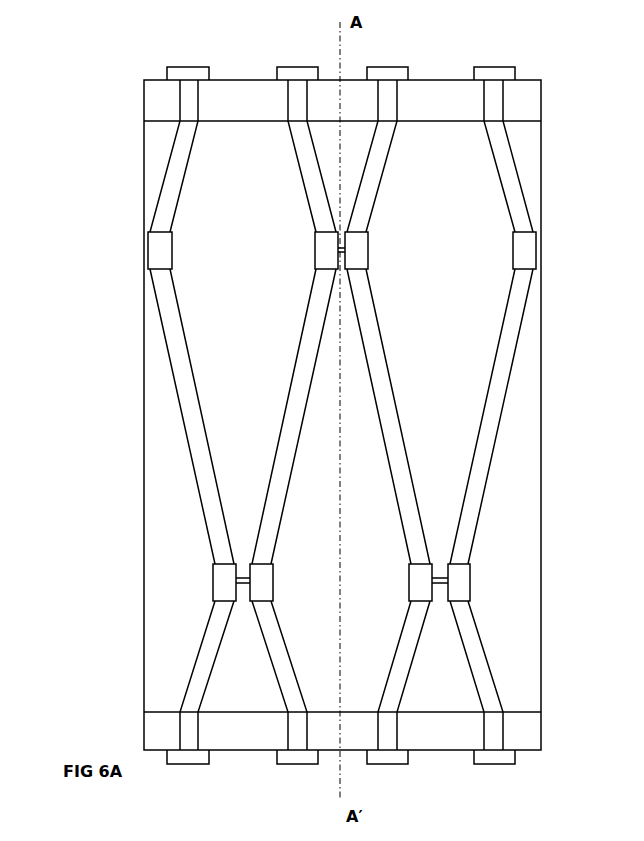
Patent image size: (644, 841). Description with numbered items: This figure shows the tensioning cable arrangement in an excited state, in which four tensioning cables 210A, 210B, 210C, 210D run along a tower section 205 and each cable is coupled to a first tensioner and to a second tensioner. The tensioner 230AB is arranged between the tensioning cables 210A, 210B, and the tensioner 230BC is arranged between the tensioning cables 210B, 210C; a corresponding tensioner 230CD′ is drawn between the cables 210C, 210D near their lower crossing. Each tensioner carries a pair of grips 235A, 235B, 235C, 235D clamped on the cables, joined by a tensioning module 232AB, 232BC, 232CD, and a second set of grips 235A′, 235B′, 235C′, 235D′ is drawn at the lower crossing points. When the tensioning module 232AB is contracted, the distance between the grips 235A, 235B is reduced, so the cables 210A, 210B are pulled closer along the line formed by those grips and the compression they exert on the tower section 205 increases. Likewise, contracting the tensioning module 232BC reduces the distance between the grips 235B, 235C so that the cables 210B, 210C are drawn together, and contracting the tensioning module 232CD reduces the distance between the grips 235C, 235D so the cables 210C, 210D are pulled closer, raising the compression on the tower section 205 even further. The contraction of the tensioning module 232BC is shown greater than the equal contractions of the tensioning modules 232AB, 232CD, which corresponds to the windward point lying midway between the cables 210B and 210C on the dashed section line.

The tower section 205 is at (144, 587).
The tensioning cable 210A is at (172, 367).
The tensioning cable 210B is at (290, 385).
The tensioning cable 210C is at (407, 450).
The tensioning cable 210D is at (520, 315).
The grip 235A is at (160, 250).
The grip 235B is at (313, 262).
The grip 235C is at (368, 260).
The grip 235D is at (524, 250).
The first lower pad 235A′ is at (212, 567).
The second lower pad 235B′ is at (273, 588).
The third lower pad 235C′ is at (407, 588).
The fourth lower pad 235D′ is at (470, 588).
The tensioner 230BC is at (345, 211).
The tensioner 230AB is at (277, 563).
The junction between beams C and D 230CD′ is at (474, 566).
The tensioning module 232BC is at (341, 270).
The tensioning module 232AB is at (243, 603).
The tensioning module 232CD is at (440, 603).